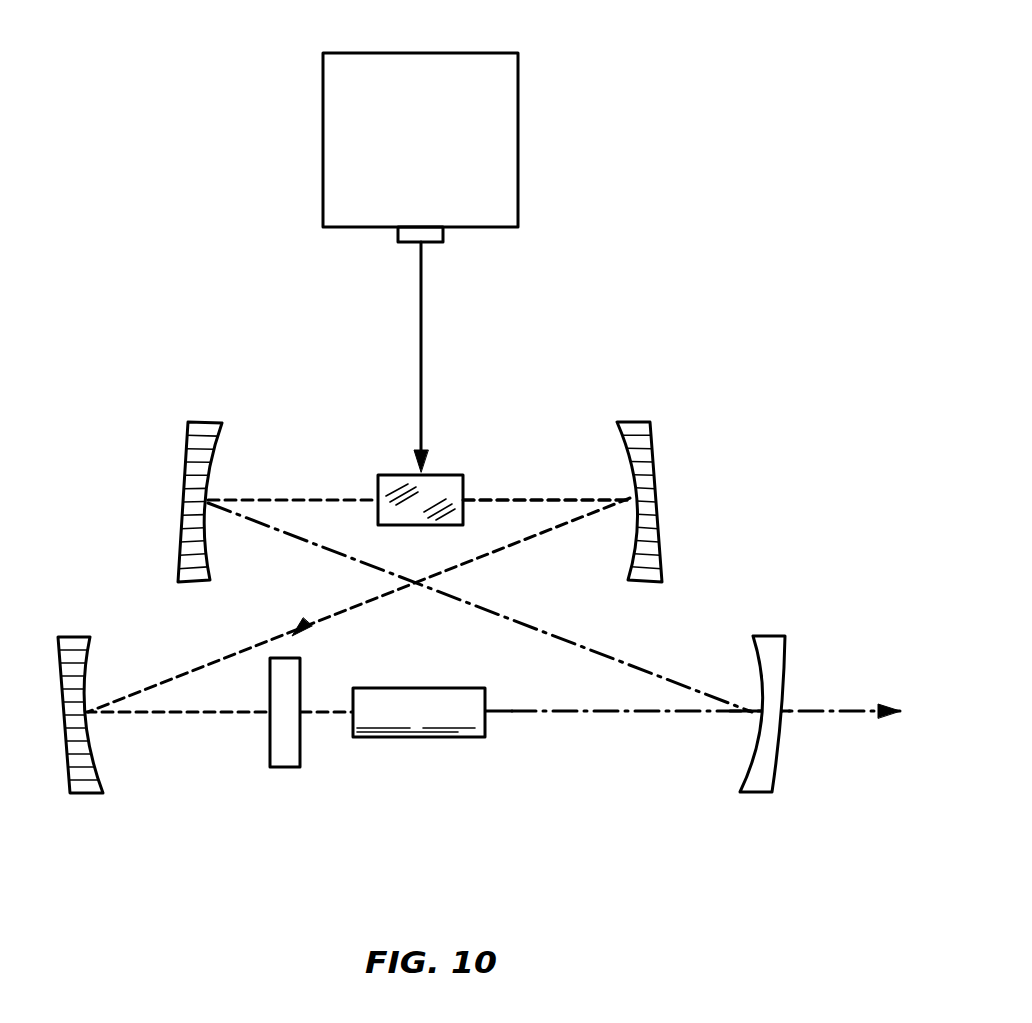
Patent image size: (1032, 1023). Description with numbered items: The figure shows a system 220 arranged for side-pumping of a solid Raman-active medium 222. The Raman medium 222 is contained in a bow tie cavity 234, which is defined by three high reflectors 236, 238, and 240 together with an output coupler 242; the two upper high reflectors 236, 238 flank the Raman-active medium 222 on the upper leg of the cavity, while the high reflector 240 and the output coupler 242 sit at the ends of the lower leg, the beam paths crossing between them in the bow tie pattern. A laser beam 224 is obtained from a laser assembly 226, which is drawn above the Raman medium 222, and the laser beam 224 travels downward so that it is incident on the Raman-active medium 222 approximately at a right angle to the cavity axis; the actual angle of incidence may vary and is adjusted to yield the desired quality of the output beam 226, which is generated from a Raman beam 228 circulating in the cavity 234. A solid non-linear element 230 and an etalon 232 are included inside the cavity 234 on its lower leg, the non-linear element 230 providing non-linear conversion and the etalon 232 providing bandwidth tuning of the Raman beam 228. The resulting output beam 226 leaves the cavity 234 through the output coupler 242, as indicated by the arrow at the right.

The system 220 is at (610, 308).
The solid Raman-active medium 222 is at (450, 475).
The laser beam 224 is at (422, 345).
The laser assembly 226 is at (323, 135).
The Raman beam 228 is at (562, 494).
The solid non-linear element 230 is at (440, 740).
The etalon 232 is at (283, 770).
The bow tie cavity 234 is at (752, 565).
The high reflector 236 is at (210, 421).
The high reflector 238 is at (660, 455).
The high reflector 240 is at (92, 795).
The output coupler 242 is at (775, 785).